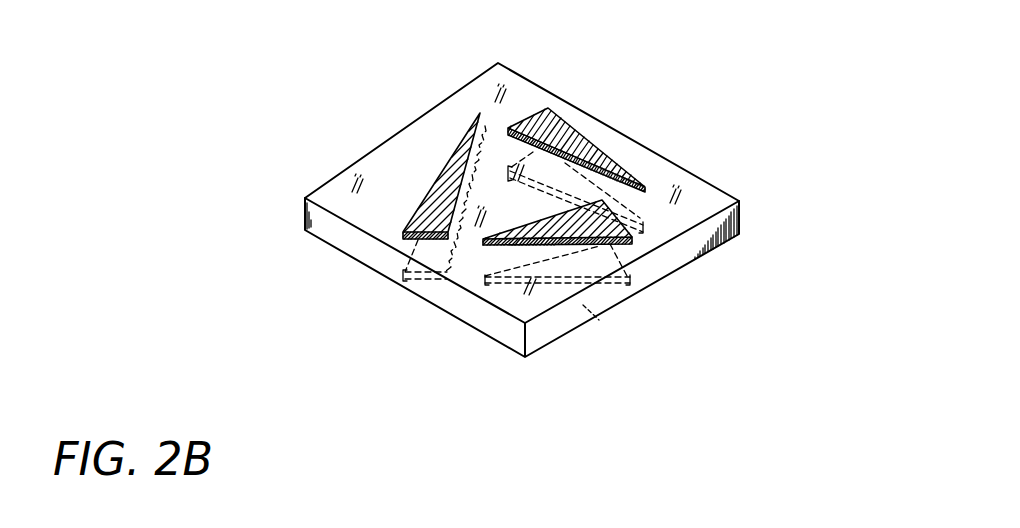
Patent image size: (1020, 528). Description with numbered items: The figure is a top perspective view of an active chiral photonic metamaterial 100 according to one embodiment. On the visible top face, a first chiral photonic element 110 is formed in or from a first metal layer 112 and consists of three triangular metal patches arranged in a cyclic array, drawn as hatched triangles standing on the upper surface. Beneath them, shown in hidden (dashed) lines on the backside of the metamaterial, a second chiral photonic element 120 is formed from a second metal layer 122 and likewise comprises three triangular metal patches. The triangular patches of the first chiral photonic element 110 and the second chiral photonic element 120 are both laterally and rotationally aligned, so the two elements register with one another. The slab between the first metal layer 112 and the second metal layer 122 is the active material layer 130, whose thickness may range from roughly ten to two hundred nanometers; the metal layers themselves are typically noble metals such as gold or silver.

The active chiral photonic metamaterial 100 is at (320, 64).
The first chiral photonic element 110 is at (581, 190).
The first metal layer 112 is at (588, 119).
The second chiral photonic element 120 is at (542, 283).
The second metal layer 122 is at (591, 316).
The active material layer 130 is at (663, 267).